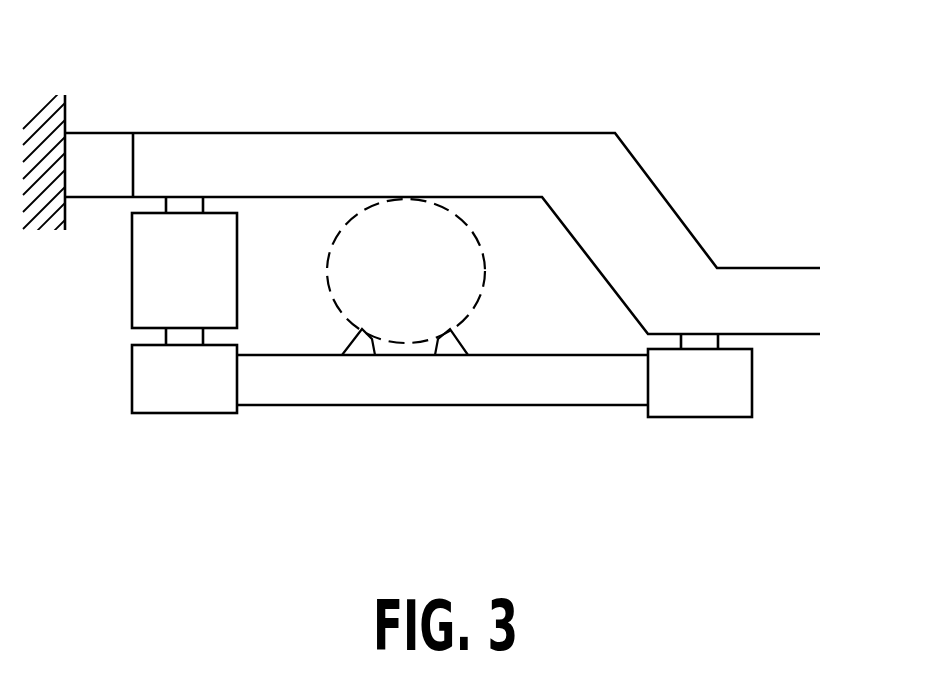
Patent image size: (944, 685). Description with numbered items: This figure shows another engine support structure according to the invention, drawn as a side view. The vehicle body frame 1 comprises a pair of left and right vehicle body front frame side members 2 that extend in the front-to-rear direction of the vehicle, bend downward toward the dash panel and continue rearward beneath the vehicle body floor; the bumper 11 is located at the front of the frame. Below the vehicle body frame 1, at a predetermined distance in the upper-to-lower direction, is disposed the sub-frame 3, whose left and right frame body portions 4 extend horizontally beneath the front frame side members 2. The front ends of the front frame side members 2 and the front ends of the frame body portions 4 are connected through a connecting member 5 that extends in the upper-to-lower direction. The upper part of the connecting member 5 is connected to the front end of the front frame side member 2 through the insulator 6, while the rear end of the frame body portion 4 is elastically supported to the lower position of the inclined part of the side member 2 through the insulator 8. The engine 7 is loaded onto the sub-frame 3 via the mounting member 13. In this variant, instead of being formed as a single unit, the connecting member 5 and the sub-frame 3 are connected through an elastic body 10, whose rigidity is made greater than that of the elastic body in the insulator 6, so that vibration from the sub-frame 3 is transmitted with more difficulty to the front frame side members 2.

The vehicle body frame 1 is at (497, 118).
The vehicle body front frame side member 2 is at (320, 148).
The sub-frame 3 is at (440, 425).
The frame body portion 4 is at (530, 395).
The connecting member 5 is at (163, 285).
The insulator 6 is at (181, 205).
The engine 7 is at (485, 271).
The insulator 8 is at (700, 342).
The elastic body 10 is at (175, 343).
The bumper 11 is at (108, 142).
The mounting member 13 is at (460, 338).